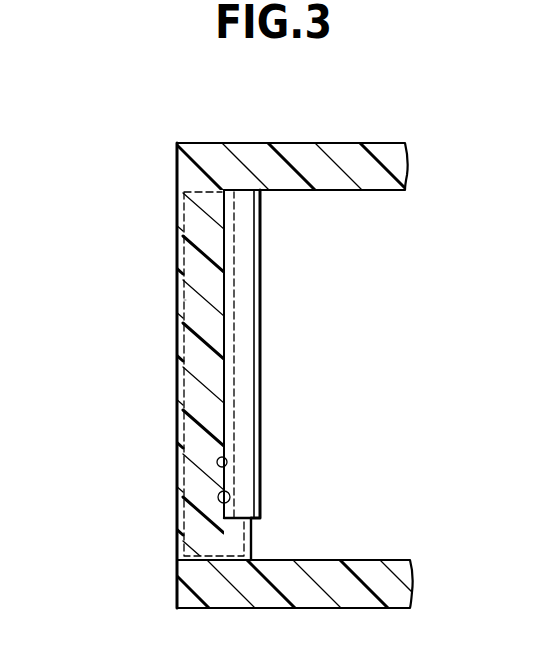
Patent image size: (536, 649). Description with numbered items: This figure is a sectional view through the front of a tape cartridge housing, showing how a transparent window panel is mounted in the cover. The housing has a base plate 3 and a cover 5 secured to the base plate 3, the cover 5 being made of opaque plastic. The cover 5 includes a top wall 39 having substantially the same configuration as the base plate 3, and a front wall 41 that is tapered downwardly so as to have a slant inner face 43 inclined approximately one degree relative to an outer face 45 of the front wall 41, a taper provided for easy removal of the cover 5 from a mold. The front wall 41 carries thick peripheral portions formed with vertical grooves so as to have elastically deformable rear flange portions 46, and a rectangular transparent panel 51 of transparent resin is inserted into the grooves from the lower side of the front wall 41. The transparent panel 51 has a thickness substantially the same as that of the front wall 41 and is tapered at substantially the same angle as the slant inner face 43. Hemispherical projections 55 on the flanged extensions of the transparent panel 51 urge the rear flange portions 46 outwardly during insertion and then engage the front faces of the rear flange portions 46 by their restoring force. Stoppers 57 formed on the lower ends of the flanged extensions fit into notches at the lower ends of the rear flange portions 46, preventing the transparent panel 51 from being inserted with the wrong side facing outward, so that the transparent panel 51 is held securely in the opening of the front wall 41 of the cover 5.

The base plate 3 is at (365, 570).
The cover 5 is at (317, 150).
The top wall 39 is at (251, 150).
The front wall 41 is at (182, 392).
The slant inner face 43 is at (217, 462).
The outer face 45 is at (218, 497).
The rear flange portion 46 is at (260, 317).
The transparent panel 51 is at (192, 256).
The hemispherical projection 55 is at (226, 299).
The stopper 57 is at (228, 540).